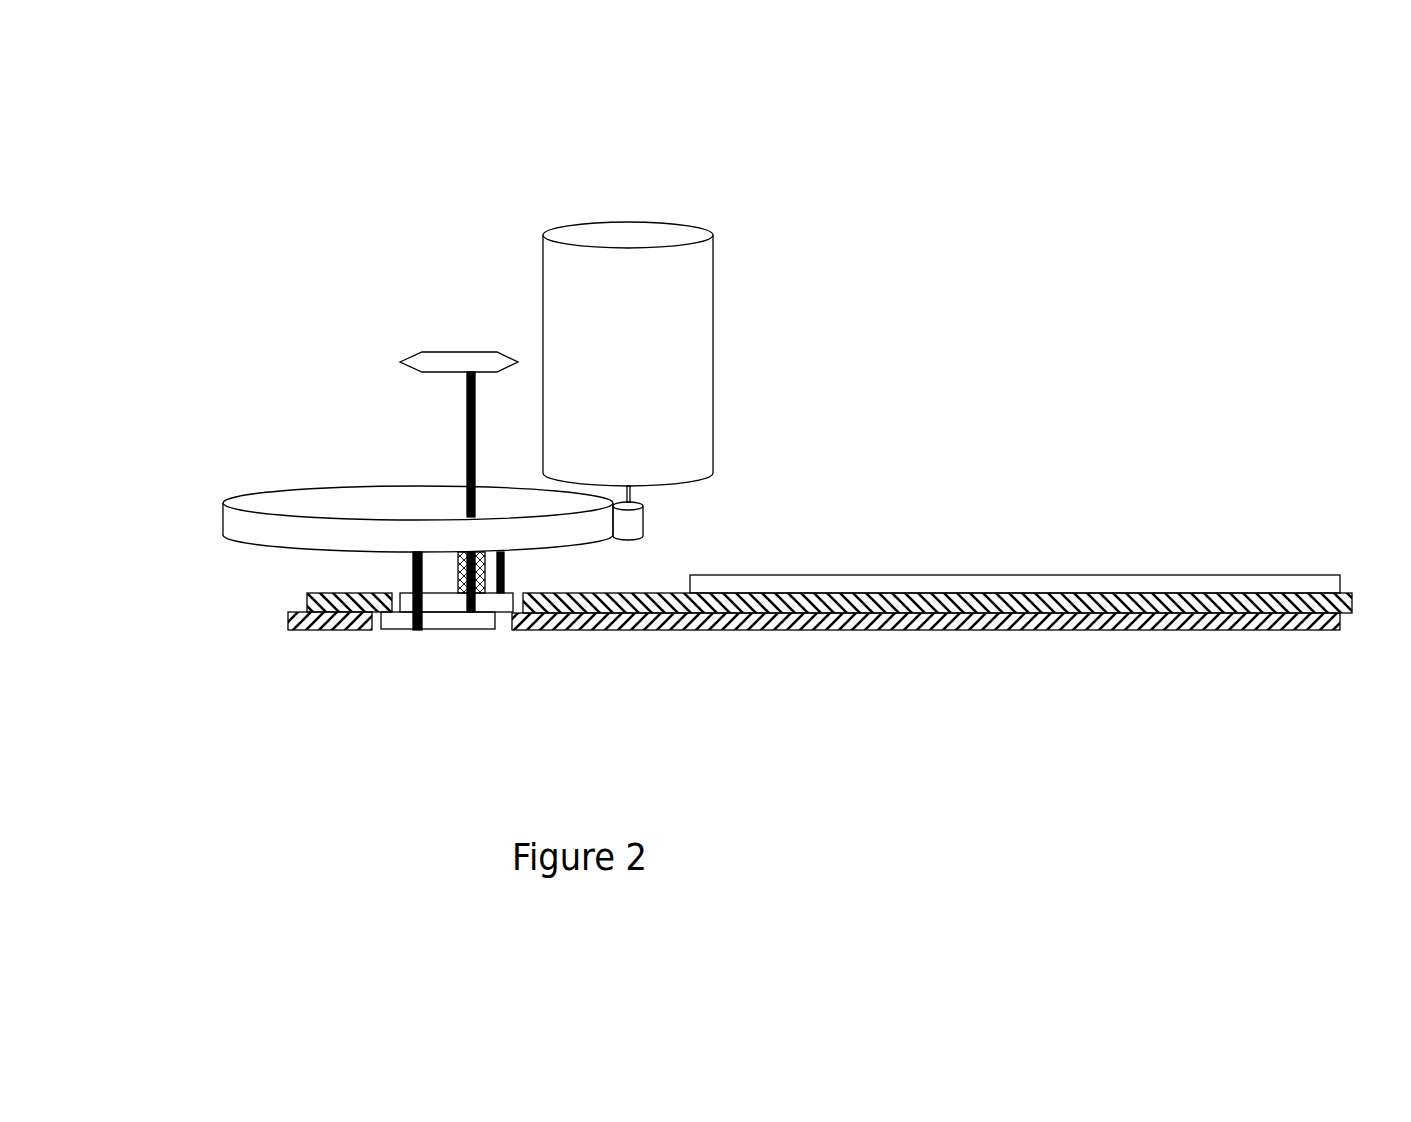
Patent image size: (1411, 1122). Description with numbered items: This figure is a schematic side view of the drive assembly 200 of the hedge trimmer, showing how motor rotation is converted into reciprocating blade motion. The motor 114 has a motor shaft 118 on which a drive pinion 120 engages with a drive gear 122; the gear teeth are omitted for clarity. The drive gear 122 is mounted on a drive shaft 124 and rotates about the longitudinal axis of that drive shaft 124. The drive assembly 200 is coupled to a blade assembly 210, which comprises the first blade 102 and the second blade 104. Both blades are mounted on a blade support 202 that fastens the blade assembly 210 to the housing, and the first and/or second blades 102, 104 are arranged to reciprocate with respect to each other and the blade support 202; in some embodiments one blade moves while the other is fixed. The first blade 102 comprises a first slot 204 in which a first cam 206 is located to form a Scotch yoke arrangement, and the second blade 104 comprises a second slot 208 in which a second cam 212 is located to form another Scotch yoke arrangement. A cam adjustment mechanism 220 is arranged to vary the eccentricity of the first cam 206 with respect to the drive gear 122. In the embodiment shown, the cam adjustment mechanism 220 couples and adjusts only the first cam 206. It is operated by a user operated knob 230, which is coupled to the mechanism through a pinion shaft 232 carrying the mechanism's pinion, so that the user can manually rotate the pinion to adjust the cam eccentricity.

The first blade 102 is at (1277, 603).
The second blade 104 is at (1273, 628).
The motor 114 is at (630, 222).
The motor shaft 118 is at (632, 498).
The drive pinion 120 is at (641, 538).
The drive gear 122 is at (225, 520).
The drive shaft 124 is at (417, 632).
The drive assembly 200 is at (302, 440).
The blade support 202 is at (1227, 575).
The first slot 204 is at (310, 595).
The first cam 206 is at (553, 628).
The second slot 208 is at (363, 630).
The blade assembly 210 is at (1125, 525).
The second cam 212 is at (498, 613).
The cam adjustment mechanism 220 is at (462, 530).
The user operated knob 230 is at (460, 370).
The pinion shaft 232 is at (460, 434).